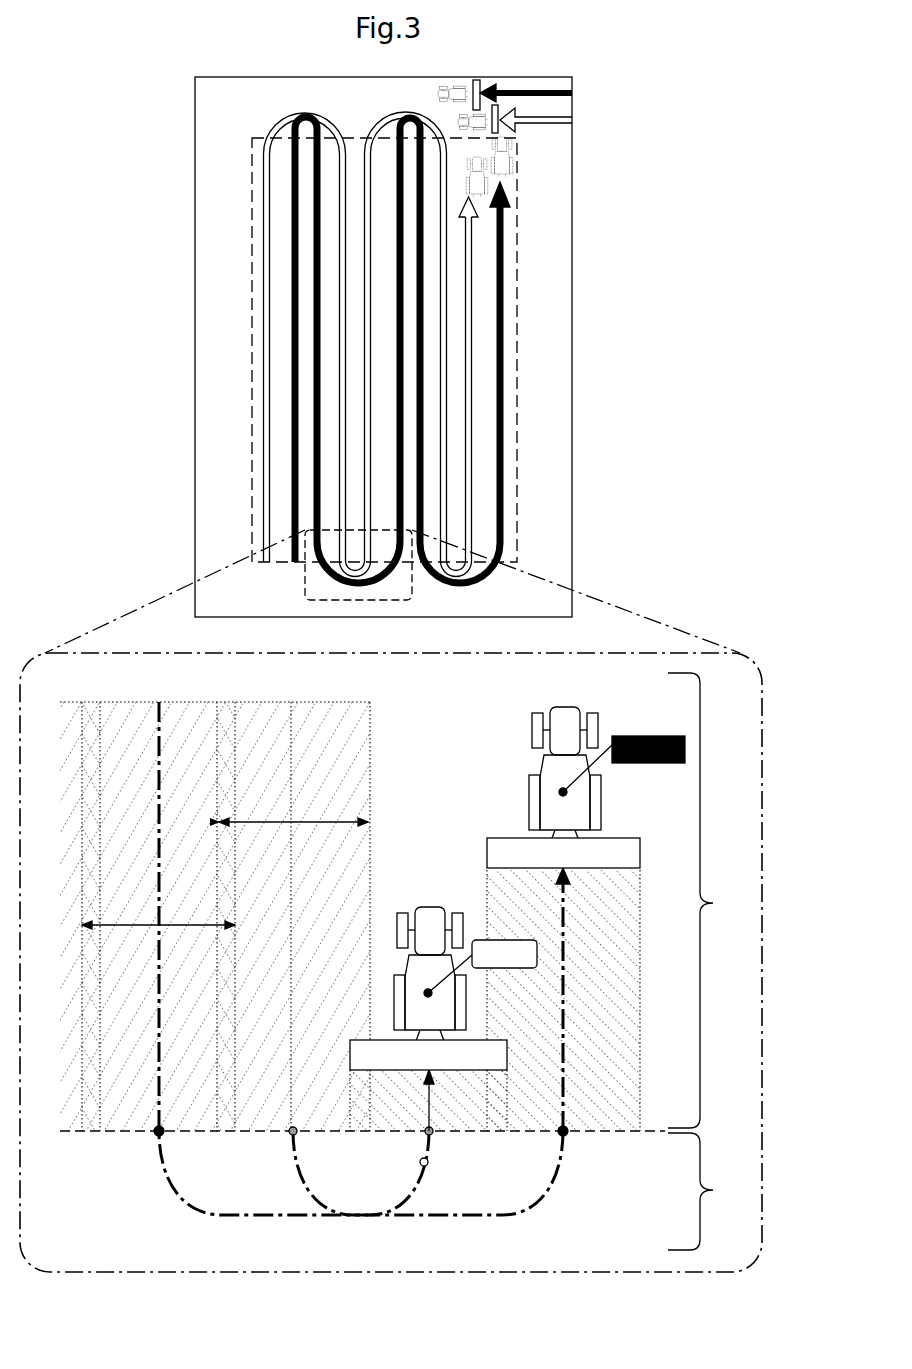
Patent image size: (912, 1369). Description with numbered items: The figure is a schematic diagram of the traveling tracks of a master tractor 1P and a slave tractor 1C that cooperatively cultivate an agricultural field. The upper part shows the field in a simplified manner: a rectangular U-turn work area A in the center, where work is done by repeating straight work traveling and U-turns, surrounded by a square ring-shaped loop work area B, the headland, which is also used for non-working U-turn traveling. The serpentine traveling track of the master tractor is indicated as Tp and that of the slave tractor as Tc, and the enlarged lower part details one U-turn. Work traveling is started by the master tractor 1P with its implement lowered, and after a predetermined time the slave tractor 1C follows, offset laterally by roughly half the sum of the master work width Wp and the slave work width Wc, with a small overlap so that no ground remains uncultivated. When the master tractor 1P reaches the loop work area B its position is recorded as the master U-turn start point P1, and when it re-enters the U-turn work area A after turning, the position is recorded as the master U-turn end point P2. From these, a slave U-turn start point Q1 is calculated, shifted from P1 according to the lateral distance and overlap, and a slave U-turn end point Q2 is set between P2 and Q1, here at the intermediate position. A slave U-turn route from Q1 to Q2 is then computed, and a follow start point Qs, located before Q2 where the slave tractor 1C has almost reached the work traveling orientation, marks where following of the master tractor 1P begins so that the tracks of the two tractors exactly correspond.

The U-turn work area A is at (356, 309).
The loop work area B is at (226, 455).
The travel route of master work vehicle Tp is at (507, 273).
The travel route of slave work vehicle Tc is at (478, 330).
The master tractor 1P is at (540, 765).
The slave tractor 1C is at (432, 908).
The ground work width of the slave tractor Wc is at (293, 811).
The ground work width of the master tractor Wp is at (158, 913).
The master U-turn start point P1 is at (159, 1133).
The master U-turn end point P2 is at (566, 1133).
The slave U-turn start point Q1 is at (291, 1133).
The slave U-turn end point Q2 is at (432, 1133).
The follow start point Qs is at (420, 1161).